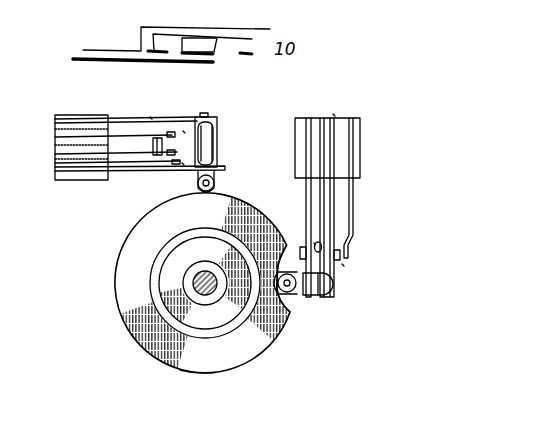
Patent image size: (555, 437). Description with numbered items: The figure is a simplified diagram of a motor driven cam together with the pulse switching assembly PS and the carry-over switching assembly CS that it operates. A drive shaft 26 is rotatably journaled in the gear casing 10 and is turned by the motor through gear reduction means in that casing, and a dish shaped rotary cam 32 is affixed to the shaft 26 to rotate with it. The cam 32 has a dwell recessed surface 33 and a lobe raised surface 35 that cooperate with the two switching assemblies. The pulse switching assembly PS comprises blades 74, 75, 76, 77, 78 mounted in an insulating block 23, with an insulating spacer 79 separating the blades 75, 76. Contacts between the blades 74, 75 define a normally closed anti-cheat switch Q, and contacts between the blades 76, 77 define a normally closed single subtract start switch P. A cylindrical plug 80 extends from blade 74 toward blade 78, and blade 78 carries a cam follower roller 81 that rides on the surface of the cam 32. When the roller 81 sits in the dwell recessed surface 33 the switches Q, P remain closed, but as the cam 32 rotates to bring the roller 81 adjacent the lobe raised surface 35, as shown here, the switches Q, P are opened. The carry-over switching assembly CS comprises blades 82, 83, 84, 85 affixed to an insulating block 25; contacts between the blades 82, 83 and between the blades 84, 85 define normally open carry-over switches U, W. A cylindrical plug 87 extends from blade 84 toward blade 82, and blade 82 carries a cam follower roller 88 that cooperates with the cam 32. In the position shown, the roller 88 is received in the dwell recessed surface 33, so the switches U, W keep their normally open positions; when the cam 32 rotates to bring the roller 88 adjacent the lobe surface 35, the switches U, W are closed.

The gear casing 10 is at (171, 44).
The insulating block 23 is at (76, 117).
The insulating block 25 is at (306, 124).
The drive shaft 26 is at (200, 280).
The rotary cam 32 is at (140, 325).
The dwell recessed surface 33 is at (283, 305).
The lobe raised surface 35 is at (198, 373).
The blade 74 is at (112, 118).
The blade 75 is at (65, 137).
The blade 76 is at (65, 153).
The blade 77 is at (62, 167).
The blade 78 is at (112, 172).
The insulating spacer 79 is at (150, 142).
The cylindrical plug 80 is at (208, 148).
The cam follower roller 81 is at (214, 184).
The blade 82 is at (306, 193).
The blade 83 is at (321, 221).
The blade 84 is at (333, 203).
The blade 85 is at (351, 243).
The cylindrical plug 87 is at (312, 290).
The cam follower roller 88 is at (285, 276).
The pulse switching assembly PS is at (146, 114).
The anti-cheat switch Q is at (183, 129).
The single subtract start switch P is at (182, 163).
The carry-over switch U is at (314, 243).
The carry-over switch W is at (342, 264).
The carry-over switching assembly CS is at (333, 113).